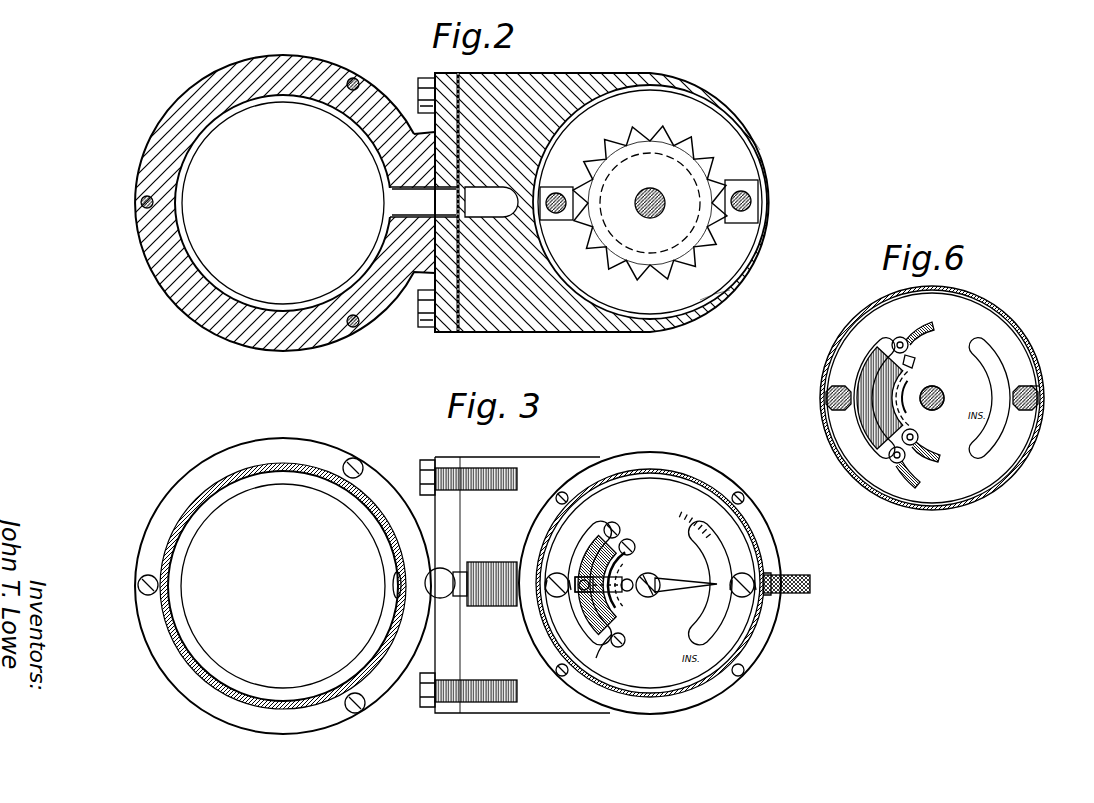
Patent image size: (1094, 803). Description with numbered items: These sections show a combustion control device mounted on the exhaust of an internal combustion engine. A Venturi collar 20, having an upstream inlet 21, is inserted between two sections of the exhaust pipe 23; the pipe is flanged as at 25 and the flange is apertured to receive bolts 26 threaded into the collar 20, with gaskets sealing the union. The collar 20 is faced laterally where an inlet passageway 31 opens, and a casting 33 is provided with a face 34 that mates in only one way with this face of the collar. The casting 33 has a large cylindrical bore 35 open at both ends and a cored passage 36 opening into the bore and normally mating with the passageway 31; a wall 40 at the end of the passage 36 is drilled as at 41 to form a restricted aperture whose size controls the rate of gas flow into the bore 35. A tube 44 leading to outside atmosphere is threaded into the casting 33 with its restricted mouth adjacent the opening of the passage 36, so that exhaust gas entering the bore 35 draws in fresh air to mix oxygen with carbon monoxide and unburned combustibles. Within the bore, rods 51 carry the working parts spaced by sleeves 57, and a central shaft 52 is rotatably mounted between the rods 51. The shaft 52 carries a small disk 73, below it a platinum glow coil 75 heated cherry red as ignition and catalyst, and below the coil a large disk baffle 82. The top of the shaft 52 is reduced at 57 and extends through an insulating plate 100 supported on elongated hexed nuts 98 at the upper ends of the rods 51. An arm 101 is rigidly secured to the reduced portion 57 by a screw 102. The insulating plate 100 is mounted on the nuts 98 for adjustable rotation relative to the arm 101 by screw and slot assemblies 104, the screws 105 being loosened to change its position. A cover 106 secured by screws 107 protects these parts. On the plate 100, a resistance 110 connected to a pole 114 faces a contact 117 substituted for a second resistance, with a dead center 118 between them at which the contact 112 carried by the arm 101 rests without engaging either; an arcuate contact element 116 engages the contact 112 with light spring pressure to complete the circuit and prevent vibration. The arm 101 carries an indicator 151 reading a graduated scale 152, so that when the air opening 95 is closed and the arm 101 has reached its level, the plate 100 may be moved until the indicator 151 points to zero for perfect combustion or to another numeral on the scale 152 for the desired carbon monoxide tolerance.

In FIG. 2, the Venturi collar 20 is at (175, 300).
In FIG. 3, the Venturi collar 20 is at (313, 483).
In FIG. 2, the upstream inlet 21 is at (392, 214).
In FIG. 3, the upstream inlet 21 is at (392, 585).
In FIG. 3, the exhaust pipe 23 is at (290, 462).
In FIG. 3, the flange 25 is at (245, 440).
In FIG. 2, the bolts 26 is at (357, 80).
In FIG. 3, the bolts 26 is at (362, 462).
In FIG. 2, the inlet passageway 31 is at (392, 190).
In FIG. 2, the casting 33 is at (562, 80).
In FIG. 3, the casting 33 is at (540, 464).
In FIG. 2, the face 34 is at (452, 332).
In FIG. 3, the face 34 is at (452, 460).
In FIG. 2, the cylindrical bore 35 is at (742, 132).
In FIG. 2, the passage 36 is at (503, 212).
In FIG. 2, the wall 40 is at (457, 190).
In FIG. 2, the restricted aperture 41 is at (457, 213).
In FIG. 3, the tube 44 is at (448, 577).
In FIG. 2, the rods 51 is at (548, 188).
In FIG. 2, the central shaft 52 is at (662, 180).
In FIG. 6, the central shaft 52 is at (946, 398).
In FIG. 2, the reduced portion 57 is at (560, 194).
In FIG. 6, the reduced portion 57 is at (943, 395).
In FIG. 2, the disk 73 is at (700, 178).
In FIG. 2, the glow coil 75 is at (643, 128).
In FIG. 2, the disk baffle 82 is at (718, 296).
In FIG. 3, the air opening 95 is at (433, 592).
In FIG. 3, the hexed nuts 98 is at (560, 597).
In FIG. 6, the hexed nuts 98 is at (1037, 392).
In FIG. 3, the insulating plate 100 is at (652, 488).
In FIG. 6, the insulating plate 100 is at (960, 485).
In FIG. 3, the arm 101 is at (627, 579).
In FIG. 3, the screw 102 is at (656, 583).
In FIG. 6, the screw and slot assemblies 104 is at (1036, 386).
In FIG. 6, the screws 105 is at (1038, 404).
In FIG. 3, the cover 106 is at (695, 698).
In FIG. 6, the cover 106 is at (907, 507).
In FIG. 3, the screws 107 is at (567, 490).
In FIG. 3, the resistance 110 is at (598, 540).
In FIG. 6, the resistance 110 is at (868, 430).
In FIG. 3, the contact 112 is at (602, 592).
In FIG. 3, the pole 114 is at (620, 530).
In FIG. 6, the pole 114 is at (890, 460).
In FIG. 3, the arcuate contact element 116 is at (636, 549).
In FIG. 6, the arcuate contact element 116 is at (912, 366).
In FIG. 3, the contact 117 is at (626, 642).
In FIG. 6, the contact 117 is at (900, 337).
In FIG. 3, the dead center 118 is at (600, 660).
In FIG. 3, the indicator 151 is at (678, 587).
In FIG. 3, the graduated scale 152 is at (705, 532).